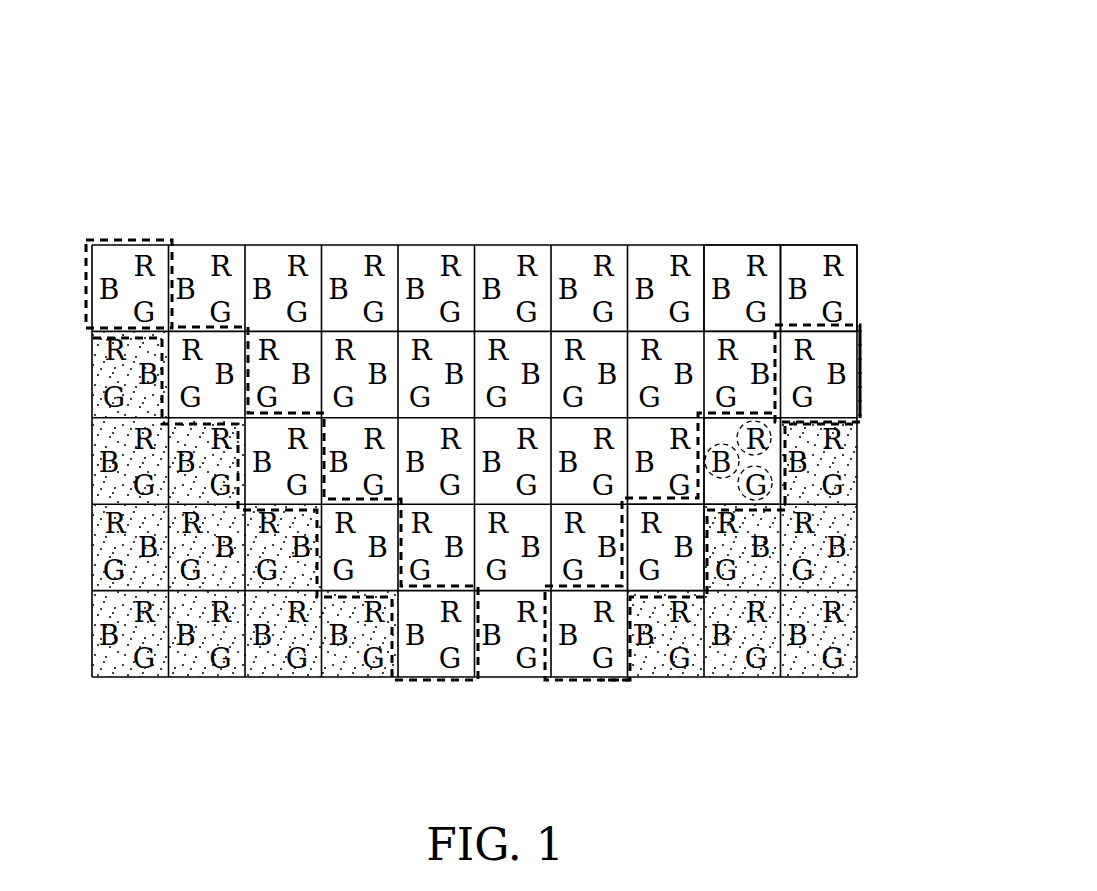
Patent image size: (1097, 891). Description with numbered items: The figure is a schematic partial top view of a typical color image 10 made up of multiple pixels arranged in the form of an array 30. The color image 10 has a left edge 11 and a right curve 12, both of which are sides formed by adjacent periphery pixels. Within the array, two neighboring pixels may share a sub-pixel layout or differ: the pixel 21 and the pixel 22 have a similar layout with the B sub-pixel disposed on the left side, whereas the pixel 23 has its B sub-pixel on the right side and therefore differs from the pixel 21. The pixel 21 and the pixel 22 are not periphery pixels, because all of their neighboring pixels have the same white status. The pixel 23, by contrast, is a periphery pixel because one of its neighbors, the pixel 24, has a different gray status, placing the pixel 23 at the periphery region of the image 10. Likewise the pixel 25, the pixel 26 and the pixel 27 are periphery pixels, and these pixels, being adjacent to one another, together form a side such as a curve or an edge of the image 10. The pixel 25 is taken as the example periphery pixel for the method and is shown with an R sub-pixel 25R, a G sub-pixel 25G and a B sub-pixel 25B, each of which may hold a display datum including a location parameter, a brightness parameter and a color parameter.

The color image 10 is at (806, 86).
The left edge 11 is at (86, 270).
The right curve 12 is at (862, 338).
The pixel 21 is at (790, 250).
The pixel 22 is at (718, 250).
The pixel 23 is at (838, 400).
The pixel 24 is at (848, 458).
The pixel 25 is at (737, 490).
The B sub-pixel 25B is at (711, 447).
The R sub-pixel 25R is at (771, 436).
The G sub-pixel 25G is at (768, 498).
The pixel 26 is at (685, 573).
The pixel 27 is at (620, 683).
The array 30 is at (566, 686).